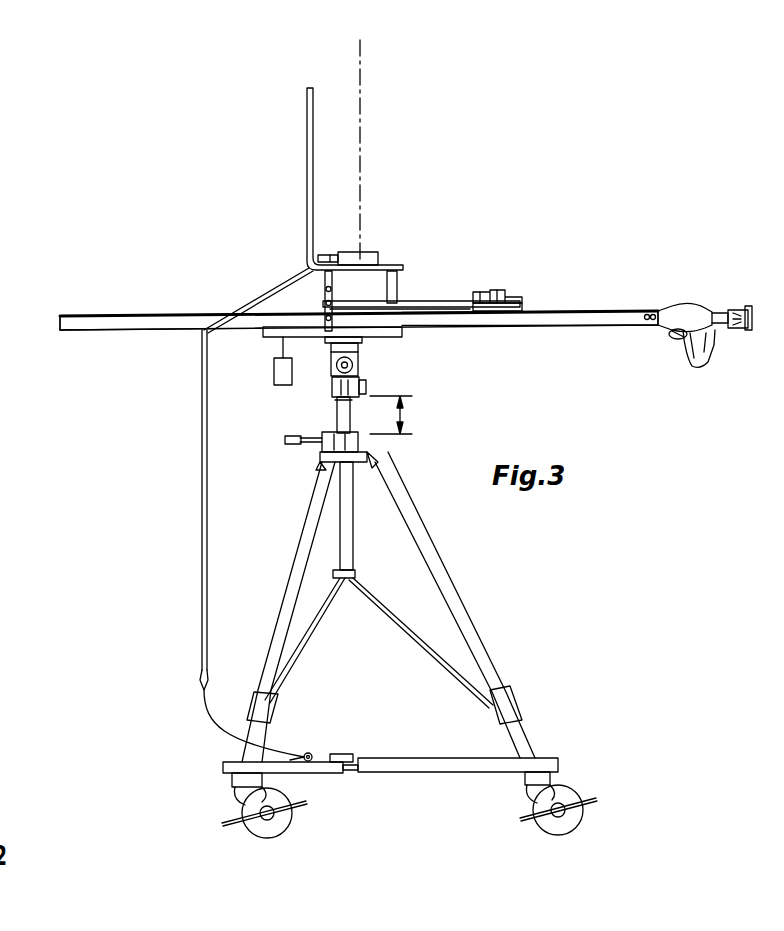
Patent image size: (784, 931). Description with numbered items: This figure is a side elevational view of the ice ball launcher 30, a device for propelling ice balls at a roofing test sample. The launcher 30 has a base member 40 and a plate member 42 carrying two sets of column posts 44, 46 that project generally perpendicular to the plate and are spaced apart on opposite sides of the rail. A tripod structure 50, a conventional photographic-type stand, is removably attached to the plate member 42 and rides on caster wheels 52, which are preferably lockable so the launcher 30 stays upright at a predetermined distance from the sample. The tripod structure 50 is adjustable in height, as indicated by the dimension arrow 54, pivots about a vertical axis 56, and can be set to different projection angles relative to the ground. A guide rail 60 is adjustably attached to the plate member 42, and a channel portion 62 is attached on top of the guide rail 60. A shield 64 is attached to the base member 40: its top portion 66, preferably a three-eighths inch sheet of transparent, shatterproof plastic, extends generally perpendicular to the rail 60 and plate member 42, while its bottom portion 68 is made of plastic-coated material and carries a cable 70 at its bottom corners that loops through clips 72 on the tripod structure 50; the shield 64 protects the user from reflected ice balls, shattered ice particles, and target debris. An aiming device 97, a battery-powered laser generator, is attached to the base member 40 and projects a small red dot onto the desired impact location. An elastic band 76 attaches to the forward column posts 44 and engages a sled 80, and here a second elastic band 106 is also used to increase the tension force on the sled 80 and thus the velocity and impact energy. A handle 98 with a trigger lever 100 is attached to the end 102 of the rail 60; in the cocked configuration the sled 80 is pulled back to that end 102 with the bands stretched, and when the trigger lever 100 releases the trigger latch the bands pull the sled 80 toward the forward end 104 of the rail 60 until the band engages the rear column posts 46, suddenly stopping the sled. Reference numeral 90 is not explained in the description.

The ice ball launcher 30 is at (452, 158).
The base member 40 is at (380, 352).
The plate member 42 is at (405, 333).
The forward column posts 44 is at (324, 293).
The rear column posts 46 is at (398, 278).
The tripod structure 50 is at (463, 603).
The caster wheels 52 is at (298, 815).
The dimension arrow 54 is at (403, 414).
The vertical axis 56 is at (362, 82).
The guide rail 60 is at (110, 333).
The channel portion 62 is at (102, 316).
The shield 64 is at (306, 122).
The top shield portion 66 is at (305, 207).
The bottom shield portion 68 is at (200, 480).
The cable 70 is at (206, 708).
The clips 72 is at (312, 753).
The elastic band 76 is at (405, 292).
The sled 80 is at (518, 291).
The clamp screw 90 is at (485, 290).
The aiming device 97 is at (365, 252).
The handle 98 is at (695, 308).
The trigger lever 100 is at (676, 338).
The end of the rail 102 is at (651, 298).
The forward end of the rail 104 is at (58, 316).
The second elastic band 106 is at (440, 300).